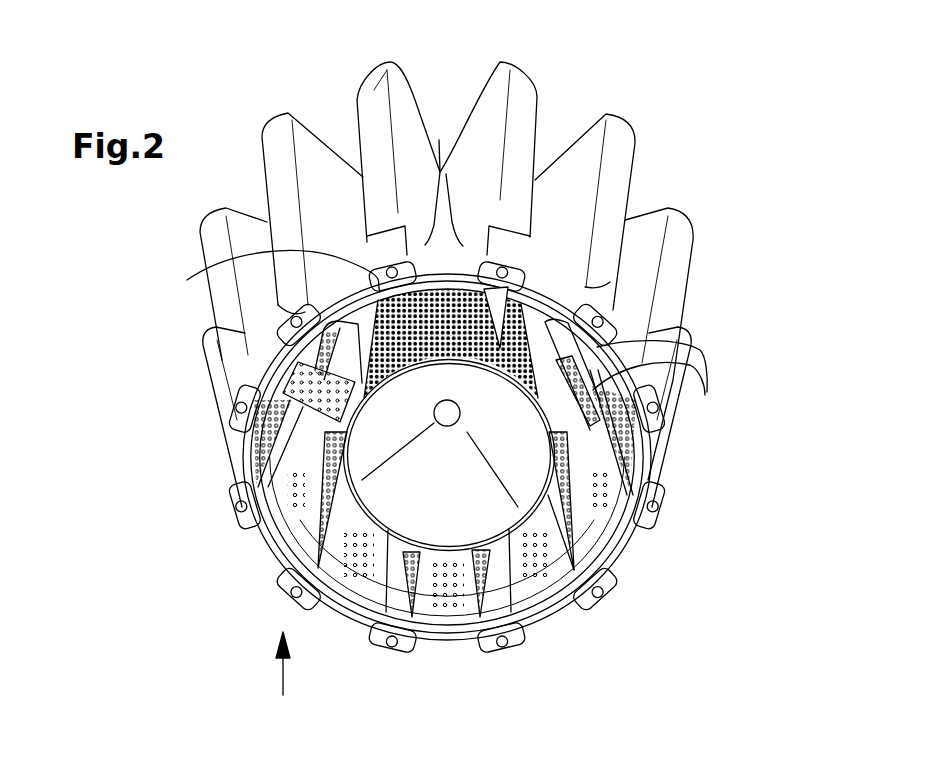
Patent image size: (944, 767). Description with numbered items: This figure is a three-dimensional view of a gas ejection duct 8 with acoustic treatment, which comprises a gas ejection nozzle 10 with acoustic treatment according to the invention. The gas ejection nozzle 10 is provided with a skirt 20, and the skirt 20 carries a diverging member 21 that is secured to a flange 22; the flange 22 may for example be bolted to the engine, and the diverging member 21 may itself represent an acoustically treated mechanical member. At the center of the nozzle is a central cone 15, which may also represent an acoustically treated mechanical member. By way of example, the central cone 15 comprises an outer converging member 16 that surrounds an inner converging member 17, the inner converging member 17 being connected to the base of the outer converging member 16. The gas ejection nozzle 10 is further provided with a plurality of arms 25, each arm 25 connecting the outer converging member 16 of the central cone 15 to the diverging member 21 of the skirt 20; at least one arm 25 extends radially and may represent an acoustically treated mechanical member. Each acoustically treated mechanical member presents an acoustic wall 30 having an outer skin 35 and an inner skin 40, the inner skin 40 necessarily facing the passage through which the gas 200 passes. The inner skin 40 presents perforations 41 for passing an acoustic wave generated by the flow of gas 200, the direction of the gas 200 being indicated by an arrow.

The gas ejection duct 8 is at (480, 365).
The gas ejection nozzle 10 is at (580, 92).
The skirt 20 is at (742, 242).
The acoustic wall 30 is at (439, 140).
The outer skin 35 is at (366, 111).
The outer converging member 16 is at (187, 282).
The diverging member 21 is at (730, 350).
The flange 22 is at (498, 649).
The central cone 15 is at (358, 512).
The arm 25 is at (481, 366).
The inner converging member 17 is at (410, 515).
The inner skin 40 is at (587, 453).
The perforations 41 is at (665, 345).
The gas 200 is at (281, 668).